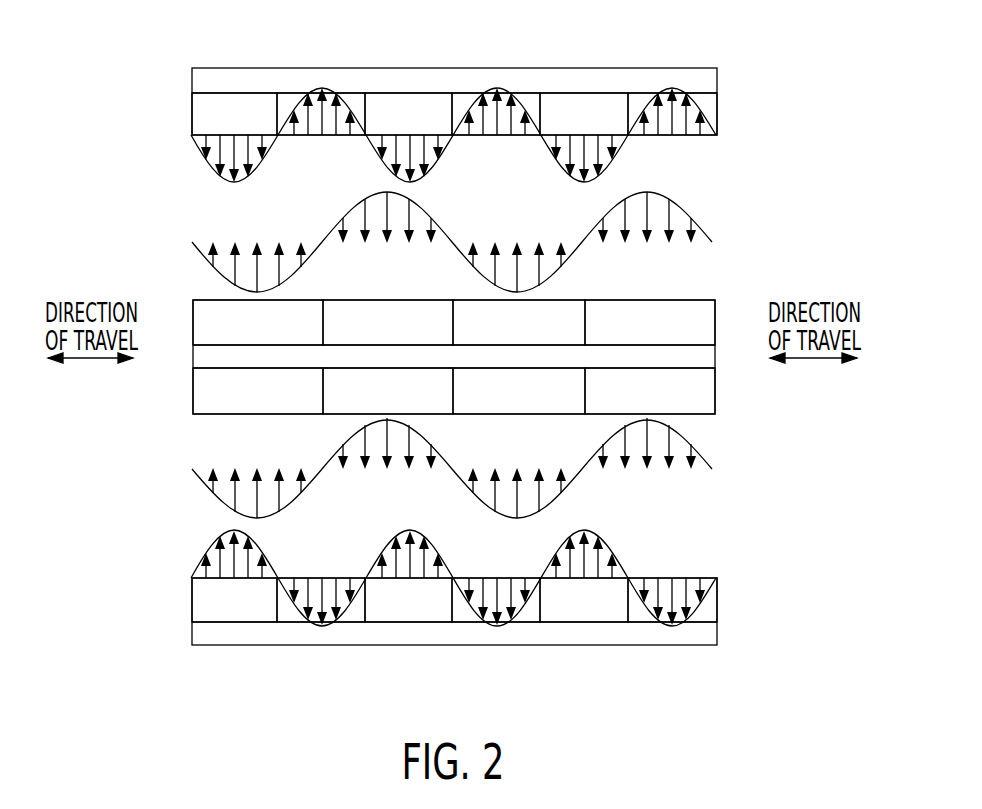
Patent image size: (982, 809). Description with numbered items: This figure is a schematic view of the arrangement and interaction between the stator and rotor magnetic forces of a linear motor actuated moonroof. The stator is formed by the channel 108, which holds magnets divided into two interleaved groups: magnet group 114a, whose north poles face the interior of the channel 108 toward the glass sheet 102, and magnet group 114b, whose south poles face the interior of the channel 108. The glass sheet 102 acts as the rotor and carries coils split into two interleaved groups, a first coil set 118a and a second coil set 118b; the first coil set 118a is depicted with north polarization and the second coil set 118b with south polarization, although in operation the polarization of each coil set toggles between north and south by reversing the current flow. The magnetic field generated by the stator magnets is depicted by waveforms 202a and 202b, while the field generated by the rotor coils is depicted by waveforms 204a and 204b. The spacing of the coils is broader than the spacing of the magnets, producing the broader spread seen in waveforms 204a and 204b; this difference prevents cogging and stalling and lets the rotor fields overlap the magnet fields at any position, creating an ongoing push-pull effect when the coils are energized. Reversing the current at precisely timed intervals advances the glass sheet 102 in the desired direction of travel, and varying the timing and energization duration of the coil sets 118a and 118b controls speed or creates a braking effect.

The glass sheet 102 is at (192, 367).
The channel 108 is at (198, 68).
The magnet group 114a is at (270, 98).
The magnet group 114b is at (358, 98).
The first coil set 118a is at (195, 313).
The second coil set 118b is at (353, 310).
The waveform 202a is at (600, 150).
The waveform 202b is at (230, 565).
The waveform 204a is at (672, 212).
The waveform 204b is at (672, 447).